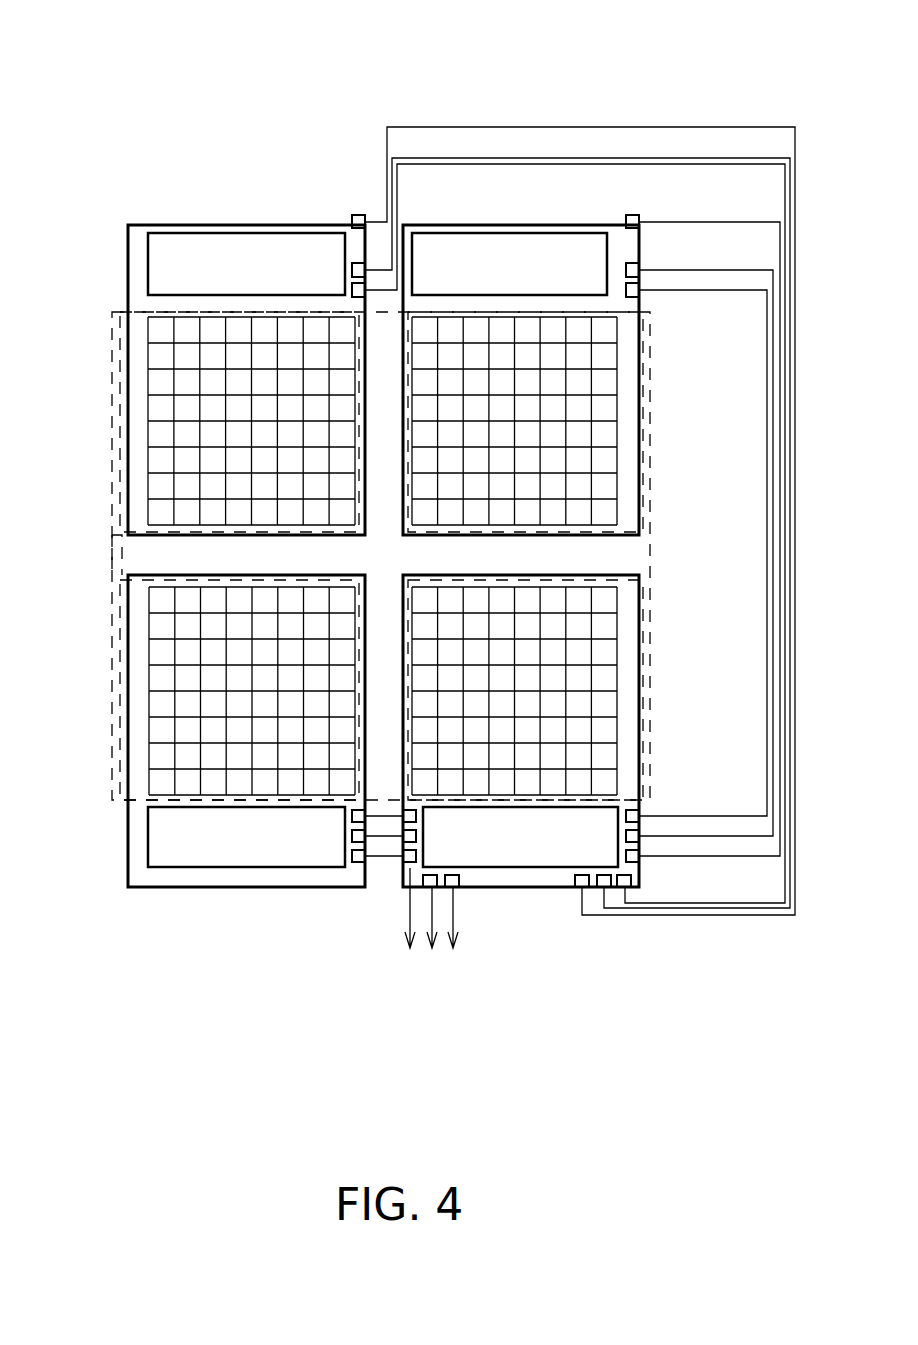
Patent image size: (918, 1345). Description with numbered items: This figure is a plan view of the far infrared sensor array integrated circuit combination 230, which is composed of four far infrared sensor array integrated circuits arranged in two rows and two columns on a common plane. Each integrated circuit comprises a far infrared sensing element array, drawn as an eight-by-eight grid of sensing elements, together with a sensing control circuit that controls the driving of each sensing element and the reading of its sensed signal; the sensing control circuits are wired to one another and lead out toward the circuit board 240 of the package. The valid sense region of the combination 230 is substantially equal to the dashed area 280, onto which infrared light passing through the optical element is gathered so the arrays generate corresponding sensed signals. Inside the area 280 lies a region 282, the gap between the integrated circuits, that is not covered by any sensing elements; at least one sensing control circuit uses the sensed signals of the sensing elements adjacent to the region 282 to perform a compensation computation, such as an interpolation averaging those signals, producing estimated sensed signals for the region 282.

The far infrared sensor array integrated circuit combination 230 is at (704, 54).
The area 280 is at (112, 350).
The region 282 is at (122, 540).
The circuit board 240 is at (432, 924).